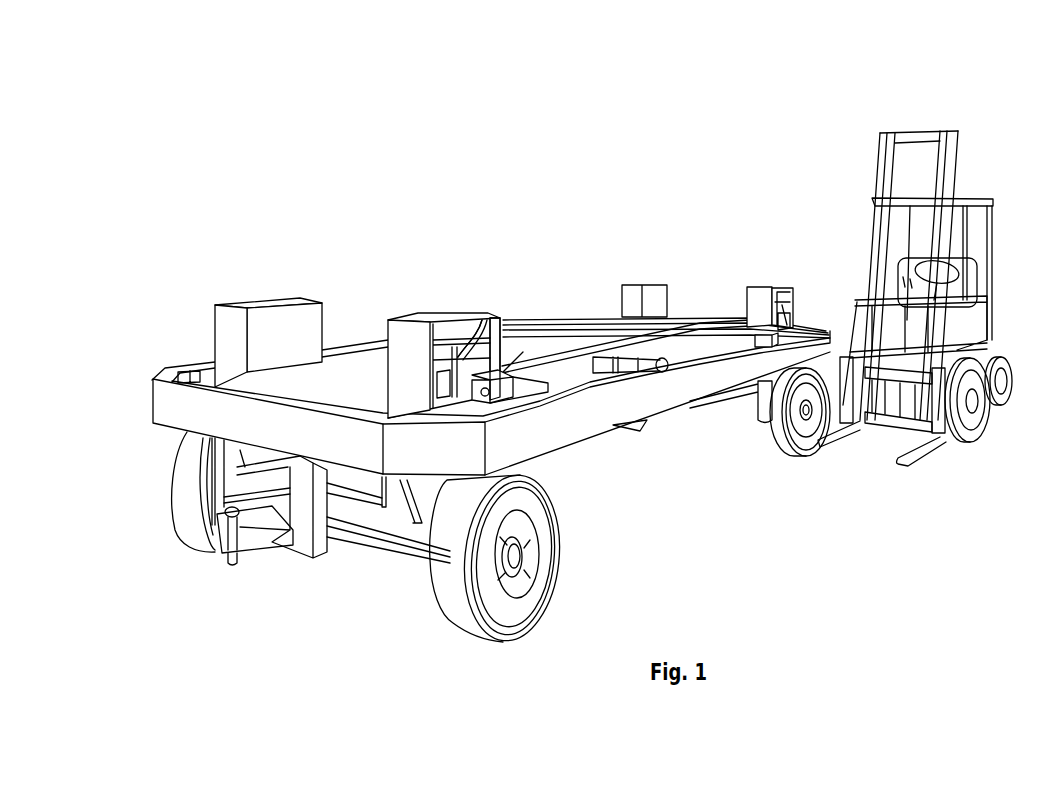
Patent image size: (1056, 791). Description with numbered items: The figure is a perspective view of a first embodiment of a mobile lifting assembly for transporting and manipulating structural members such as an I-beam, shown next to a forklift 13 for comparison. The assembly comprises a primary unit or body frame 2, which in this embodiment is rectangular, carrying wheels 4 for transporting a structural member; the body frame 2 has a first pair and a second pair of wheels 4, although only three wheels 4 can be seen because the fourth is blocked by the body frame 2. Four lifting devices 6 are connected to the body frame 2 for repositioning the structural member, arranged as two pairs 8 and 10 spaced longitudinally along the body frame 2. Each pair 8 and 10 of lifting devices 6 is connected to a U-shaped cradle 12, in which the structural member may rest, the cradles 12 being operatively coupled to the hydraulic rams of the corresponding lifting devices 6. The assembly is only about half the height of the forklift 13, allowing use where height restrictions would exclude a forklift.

The body frame 2 is at (677, 396).
The wheels 4 is at (192, 530).
The lifting devices 6 is at (493, 315).
The first pair of lifting devices 8 is at (454, 300).
The second pair of lifting devices 10 is at (635, 262).
The cradle 12 is at (230, 332).
The forklift 13 is at (989, 137).